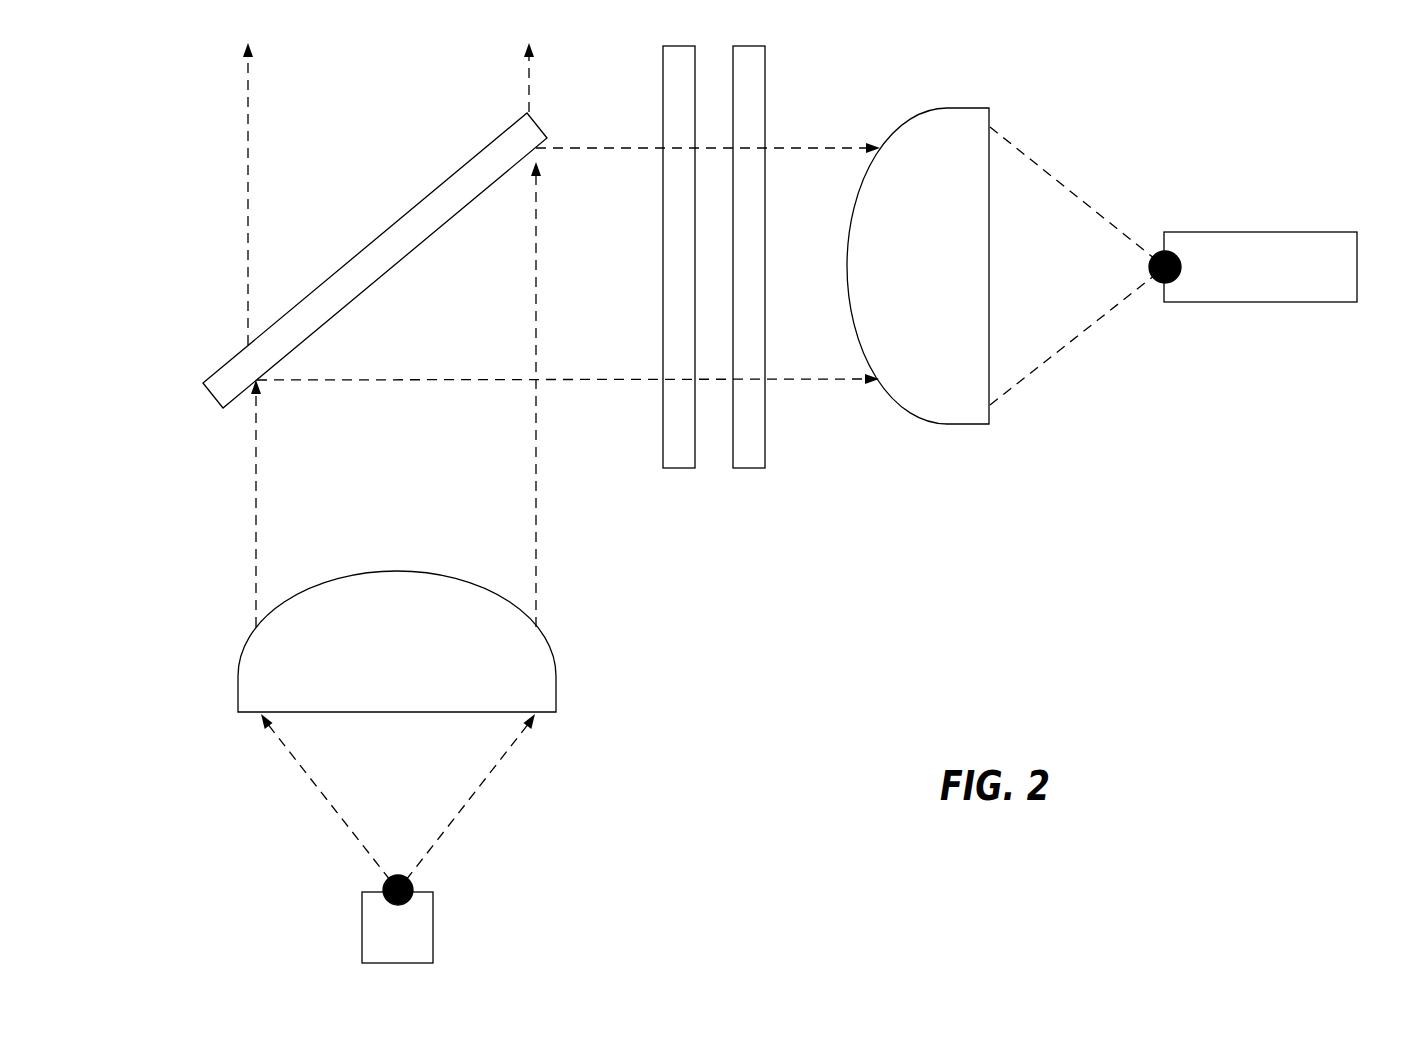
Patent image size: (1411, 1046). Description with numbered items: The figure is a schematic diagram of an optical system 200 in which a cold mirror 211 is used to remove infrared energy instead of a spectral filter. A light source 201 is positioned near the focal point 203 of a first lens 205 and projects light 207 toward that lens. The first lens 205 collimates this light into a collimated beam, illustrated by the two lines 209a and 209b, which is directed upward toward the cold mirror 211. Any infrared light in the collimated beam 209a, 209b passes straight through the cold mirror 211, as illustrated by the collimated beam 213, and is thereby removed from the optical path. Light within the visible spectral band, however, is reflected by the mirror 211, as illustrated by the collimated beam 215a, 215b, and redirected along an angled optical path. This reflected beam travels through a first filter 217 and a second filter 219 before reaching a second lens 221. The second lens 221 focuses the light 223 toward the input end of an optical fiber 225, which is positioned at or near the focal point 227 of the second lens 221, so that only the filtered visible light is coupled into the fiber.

The optical system 200 is at (1086, 620).
The light source 201 is at (370, 943).
The focal point 203 is at (386, 886).
The first lens 205 is at (249, 662).
The light 207 is at (500, 776).
The collimated beam 209a is at (255, 533).
The collimated beam 209b is at (535, 535).
The cold mirror 211 is at (236, 351).
The collimated beam 213 is at (246, 182).
The collimated beam 215a is at (628, 147).
The collimated beam 215b is at (626, 381).
The first filter 217 is at (664, 111).
The second filter 219 is at (766, 118).
The second lens 221 is at (912, 413).
The light 223 is at (1058, 178).
The optical fiber 225 is at (1270, 232).
The focal point 227 is at (1160, 280).